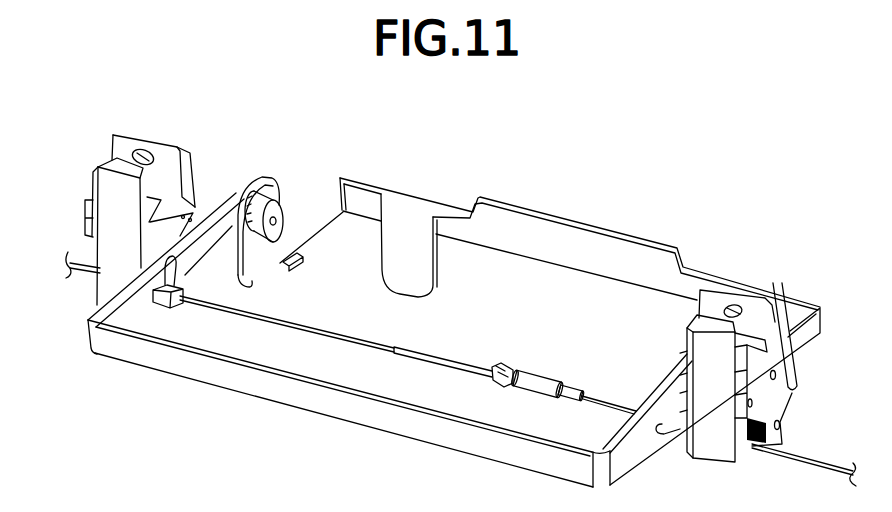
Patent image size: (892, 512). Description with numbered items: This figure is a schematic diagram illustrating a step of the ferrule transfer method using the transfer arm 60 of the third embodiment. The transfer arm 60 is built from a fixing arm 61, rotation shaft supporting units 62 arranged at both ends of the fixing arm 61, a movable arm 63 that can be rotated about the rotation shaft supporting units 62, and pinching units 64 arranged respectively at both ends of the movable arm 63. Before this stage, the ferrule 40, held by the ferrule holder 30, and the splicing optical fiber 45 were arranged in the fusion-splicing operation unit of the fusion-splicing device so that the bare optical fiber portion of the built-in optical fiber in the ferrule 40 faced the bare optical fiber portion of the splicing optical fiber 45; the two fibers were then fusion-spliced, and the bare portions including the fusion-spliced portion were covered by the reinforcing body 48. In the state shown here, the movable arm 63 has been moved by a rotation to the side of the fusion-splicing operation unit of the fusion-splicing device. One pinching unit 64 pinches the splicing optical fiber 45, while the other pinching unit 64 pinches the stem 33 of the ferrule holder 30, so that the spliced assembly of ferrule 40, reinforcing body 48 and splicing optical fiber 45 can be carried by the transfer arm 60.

The transfer arm 60 is at (780, 218).
The fixing arm 61 is at (553, 232).
The movable arm 63 is at (188, 365).
The pinching unit 64 is at (110, 218).
The rotation shaft supporting unit 62 is at (275, 181).
The splicing optical fiber 45 is at (339, 322).
The reinforcing body 48 is at (436, 356).
The ferrule 40 is at (506, 358).
The ferrule holder 30 is at (543, 364).
The stem 33 is at (817, 457).